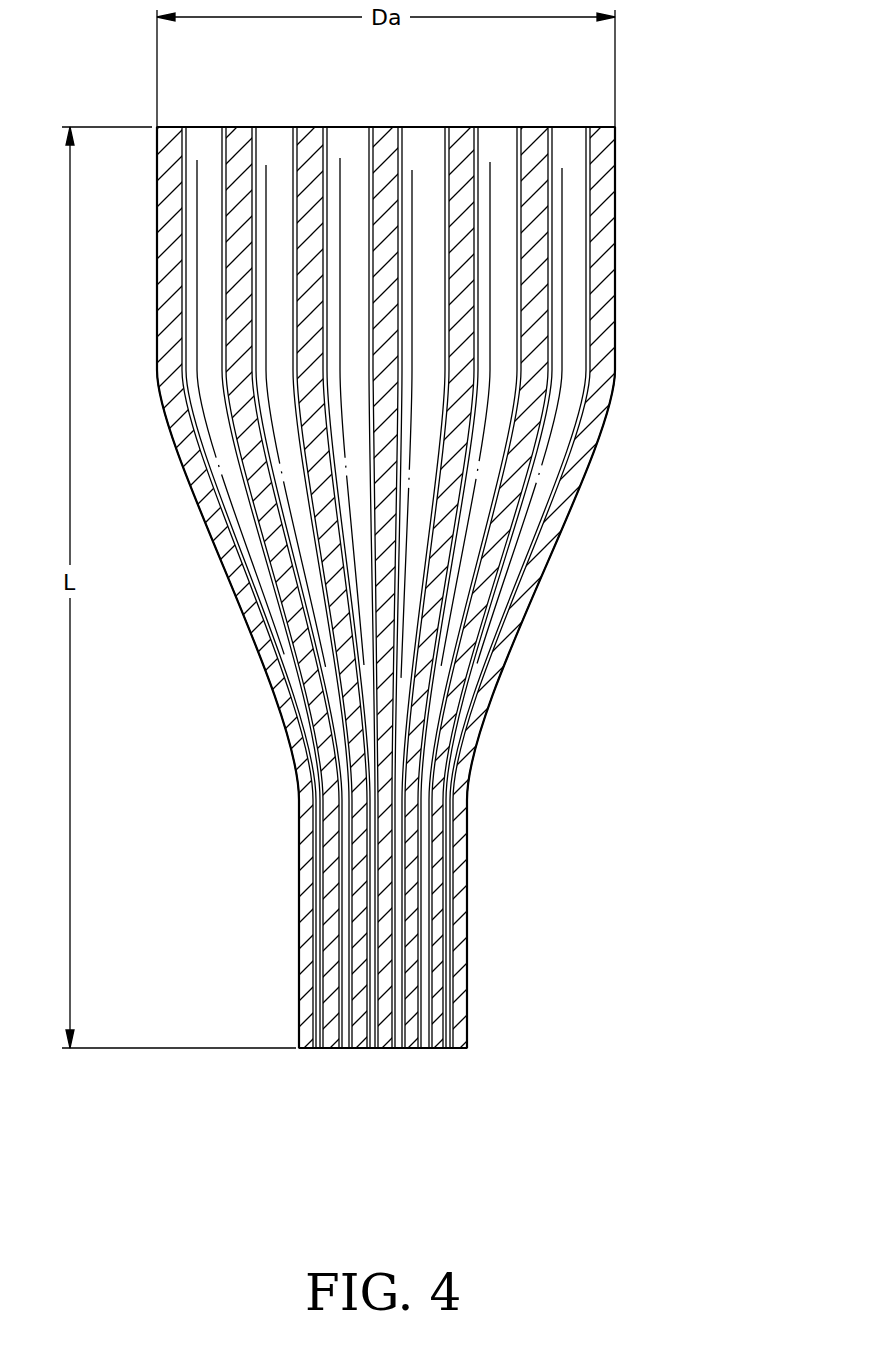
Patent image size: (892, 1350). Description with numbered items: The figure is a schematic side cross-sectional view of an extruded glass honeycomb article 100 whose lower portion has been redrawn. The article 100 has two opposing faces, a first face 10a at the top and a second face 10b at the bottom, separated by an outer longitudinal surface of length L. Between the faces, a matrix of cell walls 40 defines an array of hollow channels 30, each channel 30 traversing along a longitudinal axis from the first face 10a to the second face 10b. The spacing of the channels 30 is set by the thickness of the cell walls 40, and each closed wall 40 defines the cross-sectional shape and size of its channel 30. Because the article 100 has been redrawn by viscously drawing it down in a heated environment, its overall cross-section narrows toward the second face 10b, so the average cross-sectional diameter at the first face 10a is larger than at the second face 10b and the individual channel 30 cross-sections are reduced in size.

The extruded glass article 100 is at (456, 600).
The first face 10a is at (538, 127).
The second face 10b is at (408, 1048).
The channels 30 is at (571, 280).
The cell walls 40 is at (608, 190).